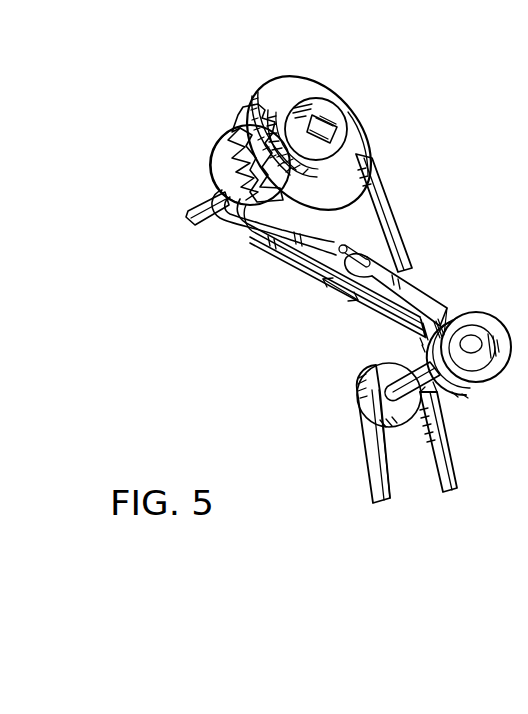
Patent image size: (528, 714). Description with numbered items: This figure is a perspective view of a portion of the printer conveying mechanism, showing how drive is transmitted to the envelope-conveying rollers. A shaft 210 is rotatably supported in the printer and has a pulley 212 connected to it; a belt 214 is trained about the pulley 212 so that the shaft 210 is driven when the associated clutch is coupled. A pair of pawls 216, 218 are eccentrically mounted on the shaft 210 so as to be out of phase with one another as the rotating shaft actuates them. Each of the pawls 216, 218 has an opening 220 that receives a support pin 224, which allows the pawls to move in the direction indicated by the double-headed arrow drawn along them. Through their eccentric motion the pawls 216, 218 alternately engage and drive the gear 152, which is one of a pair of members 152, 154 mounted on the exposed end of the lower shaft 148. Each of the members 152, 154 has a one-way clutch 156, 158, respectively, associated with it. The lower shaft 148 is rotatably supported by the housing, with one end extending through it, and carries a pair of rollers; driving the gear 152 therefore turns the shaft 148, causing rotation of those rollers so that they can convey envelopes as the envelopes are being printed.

The lower shaft 148 is at (198, 196).
The member 152 is at (216, 150).
The member 154 is at (300, 83).
The one-way clutch 156 is at (238, 127).
The one-way clutch 158 is at (327, 111).
The shaft 210 is at (433, 393).
The pulley 212 is at (372, 366).
The belt 214 is at (366, 451).
The pawl 216 is at (413, 302).
The pawl 218 is at (387, 305).
The opening 220 is at (362, 250).
The support pin 224 is at (318, 257).